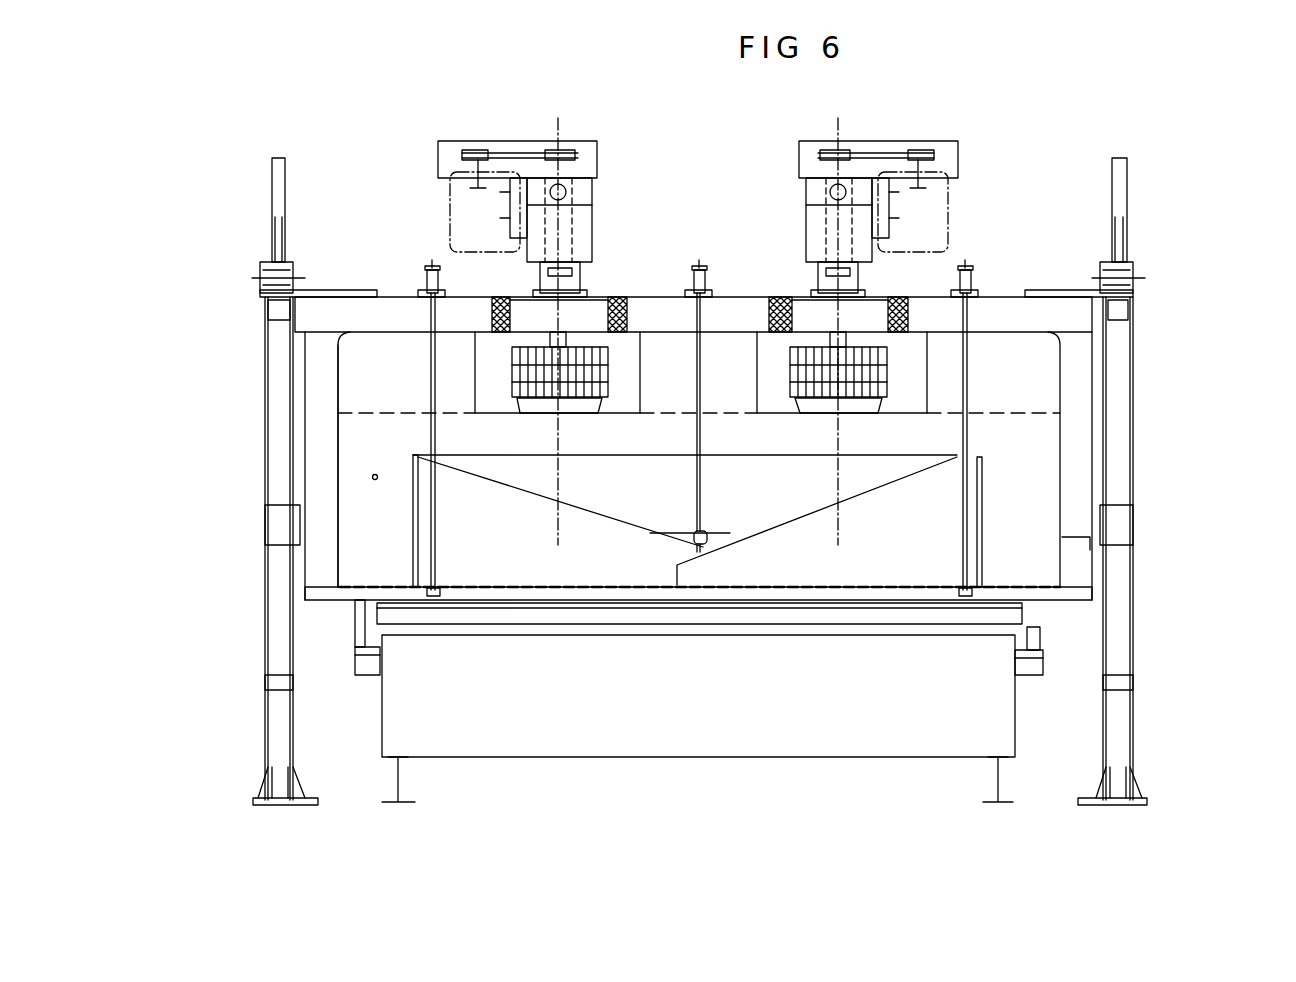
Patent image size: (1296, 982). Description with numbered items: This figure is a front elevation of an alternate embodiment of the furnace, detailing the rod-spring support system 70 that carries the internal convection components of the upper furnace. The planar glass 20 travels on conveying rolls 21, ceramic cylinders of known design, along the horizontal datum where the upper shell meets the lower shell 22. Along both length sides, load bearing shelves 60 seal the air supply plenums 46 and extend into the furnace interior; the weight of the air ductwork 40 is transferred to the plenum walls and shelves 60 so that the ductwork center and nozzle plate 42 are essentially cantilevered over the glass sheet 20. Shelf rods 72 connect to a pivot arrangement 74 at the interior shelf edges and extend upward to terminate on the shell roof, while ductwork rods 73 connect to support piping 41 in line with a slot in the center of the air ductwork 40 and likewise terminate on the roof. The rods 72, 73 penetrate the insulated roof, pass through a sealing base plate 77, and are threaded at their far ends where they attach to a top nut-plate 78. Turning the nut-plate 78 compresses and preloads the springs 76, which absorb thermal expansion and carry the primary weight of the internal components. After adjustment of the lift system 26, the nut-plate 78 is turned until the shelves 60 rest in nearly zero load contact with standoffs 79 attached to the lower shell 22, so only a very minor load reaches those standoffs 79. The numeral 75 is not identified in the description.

The planar glass 20 is at (902, 603).
The conveying rolls 21 is at (997, 618).
The lower shell 22 is at (947, 717).
The lift system 26 is at (1140, 445).
The air ductwork 40 is at (940, 512).
The support piping 41 is at (708, 540).
The nozzle plate 42 is at (885, 586).
The air supply plenum 46 is at (375, 477).
The load bearing shelves 60 is at (368, 582).
The rod-spring support system 70 is at (990, 267).
The shelf rods 72 is at (430, 380).
The ductwork rods 73 is at (1073, 357).
The pivot arrangement 74 is at (440, 592).
The post upper section 75 is at (383, 290).
The springs 76 is at (423, 287).
The sealing base plate 77 is at (410, 293).
The top nut-plate 78 is at (427, 290).
The standoffs 79 is at (363, 627).